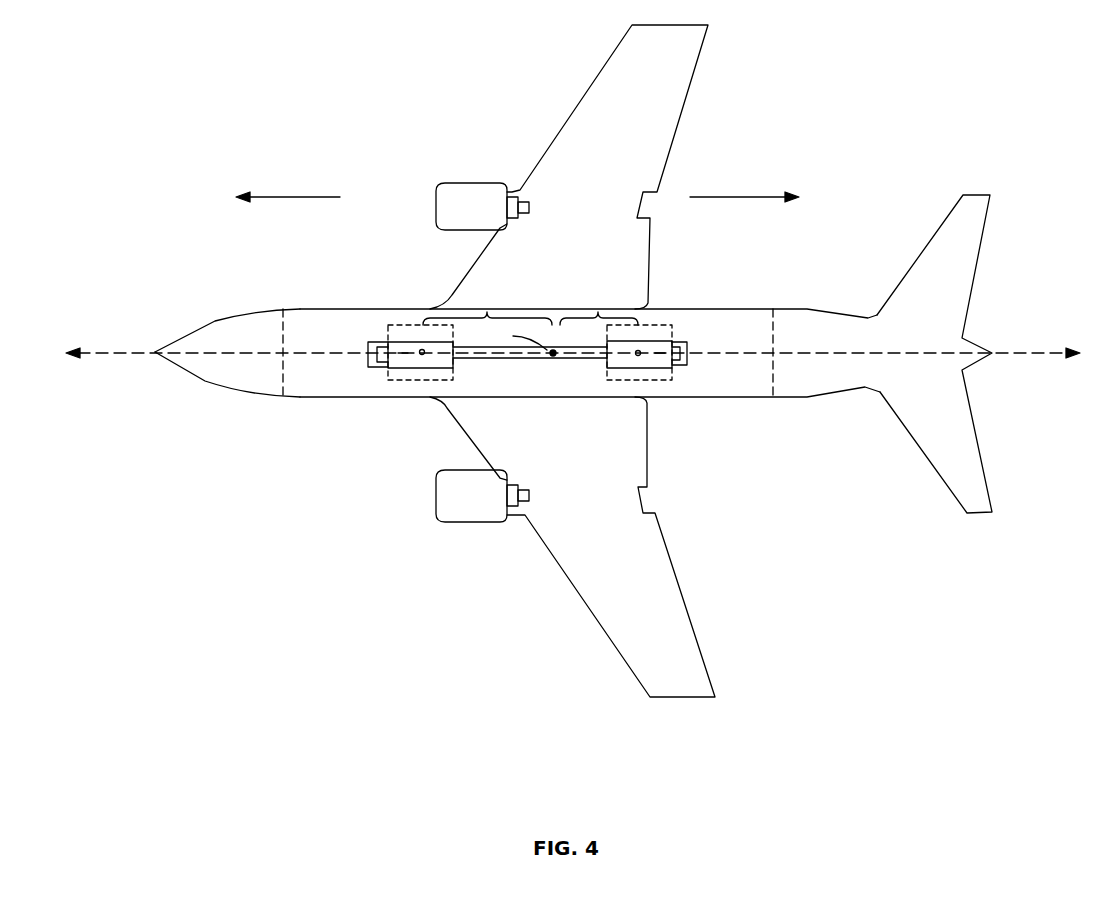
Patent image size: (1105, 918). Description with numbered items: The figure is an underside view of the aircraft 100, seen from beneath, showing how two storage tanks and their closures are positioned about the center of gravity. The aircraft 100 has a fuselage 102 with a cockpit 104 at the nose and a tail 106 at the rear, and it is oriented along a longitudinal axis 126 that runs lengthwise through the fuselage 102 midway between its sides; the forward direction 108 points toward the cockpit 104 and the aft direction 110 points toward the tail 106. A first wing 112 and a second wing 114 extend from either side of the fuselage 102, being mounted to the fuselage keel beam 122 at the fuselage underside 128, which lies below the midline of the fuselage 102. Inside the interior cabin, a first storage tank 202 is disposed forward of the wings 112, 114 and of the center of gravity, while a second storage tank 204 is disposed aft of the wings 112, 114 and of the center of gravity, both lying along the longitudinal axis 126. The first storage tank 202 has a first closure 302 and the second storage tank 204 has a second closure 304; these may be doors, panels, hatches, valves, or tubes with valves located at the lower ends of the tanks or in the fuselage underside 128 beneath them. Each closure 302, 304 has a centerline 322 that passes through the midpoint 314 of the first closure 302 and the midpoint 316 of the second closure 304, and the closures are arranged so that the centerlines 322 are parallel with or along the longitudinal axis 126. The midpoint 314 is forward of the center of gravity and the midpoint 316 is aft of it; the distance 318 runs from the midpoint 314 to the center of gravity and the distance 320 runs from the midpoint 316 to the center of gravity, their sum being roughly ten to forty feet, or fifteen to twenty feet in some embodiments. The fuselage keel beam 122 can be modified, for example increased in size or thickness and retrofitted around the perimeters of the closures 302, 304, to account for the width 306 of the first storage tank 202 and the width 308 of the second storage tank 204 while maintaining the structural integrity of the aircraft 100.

The aircraft 100 is at (820, 172).
The fuselage 102 is at (754, 304).
The cockpit 104 is at (208, 338).
The tail 106 is at (967, 262).
The forward direction 108 is at (288, 186).
The aft direction 110 is at (744, 186).
The first wing 112 is at (563, 170).
The second wing 114 is at (639, 575).
The fuselage keel beam 122 is at (523, 362).
The longitudinal axis 126 is at (573, 343).
The fuselage underside 128 is at (305, 326).
The first storage tank 202 is at (413, 380).
The second storage tank 204 is at (653, 380).
The first closure 302 is at (423, 370).
The second closure 304 is at (640, 367).
The width of first storage tank 306 is at (368, 353).
The width of second storage tank 308 is at (690, 353).
The midpoint of first closure 314 is at (421, 349).
The midpoint of second closure 316 is at (640, 350).
The distance 318 is at (487, 304).
The distance 320 is at (599, 304).
The centerline 322 is at (403, 353).